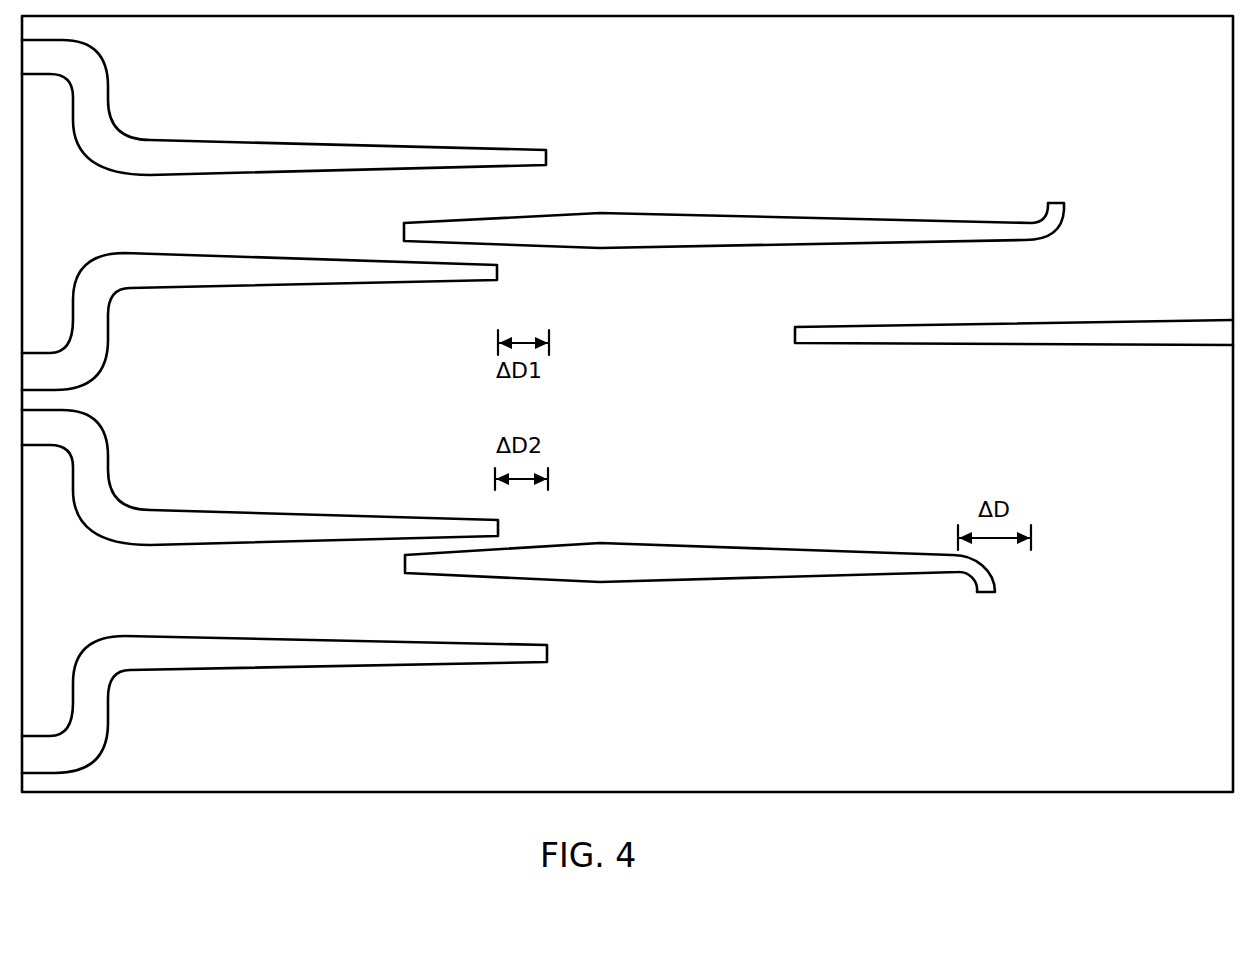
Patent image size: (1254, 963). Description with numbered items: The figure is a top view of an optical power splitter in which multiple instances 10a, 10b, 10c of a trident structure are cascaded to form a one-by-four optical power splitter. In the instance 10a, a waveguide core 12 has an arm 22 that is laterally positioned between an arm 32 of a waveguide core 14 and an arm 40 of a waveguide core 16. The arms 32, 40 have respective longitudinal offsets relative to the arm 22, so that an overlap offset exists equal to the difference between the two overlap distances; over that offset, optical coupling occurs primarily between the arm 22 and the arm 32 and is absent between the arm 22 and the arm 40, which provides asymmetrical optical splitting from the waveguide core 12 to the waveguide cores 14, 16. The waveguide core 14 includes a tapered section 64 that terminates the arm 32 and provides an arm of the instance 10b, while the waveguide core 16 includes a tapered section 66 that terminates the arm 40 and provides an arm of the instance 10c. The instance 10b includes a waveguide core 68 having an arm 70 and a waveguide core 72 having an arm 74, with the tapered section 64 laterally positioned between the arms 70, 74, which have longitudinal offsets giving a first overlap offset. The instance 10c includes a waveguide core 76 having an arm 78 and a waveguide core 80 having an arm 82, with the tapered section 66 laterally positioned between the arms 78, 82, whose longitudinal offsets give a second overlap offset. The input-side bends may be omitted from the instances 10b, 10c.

The instance of the structure 10a is at (818, 135).
The instance of the structure 10b is at (450, 90).
The instance of the structure 10c is at (450, 705).
The waveguide core 12 is at (1157, 372).
The waveguide core 14 is at (750, 265).
The waveguide core 16 is at (795, 598).
The arm 22 is at (988, 338).
The arm 32 is at (735, 217).
The arm 40 is at (705, 568).
The tapered section 64 is at (535, 230).
The tapered section 66 is at (550, 570).
The waveguide core 68 is at (237, 128).
The arm 70 is at (347, 160).
The waveguide core 72 is at (320, 295).
The arm 74 is at (254, 271).
The waveguide core 76 is at (255, 495).
The arm 78 is at (365, 528).
The waveguide core 80 is at (340, 683).
The arm 82 is at (272, 656).